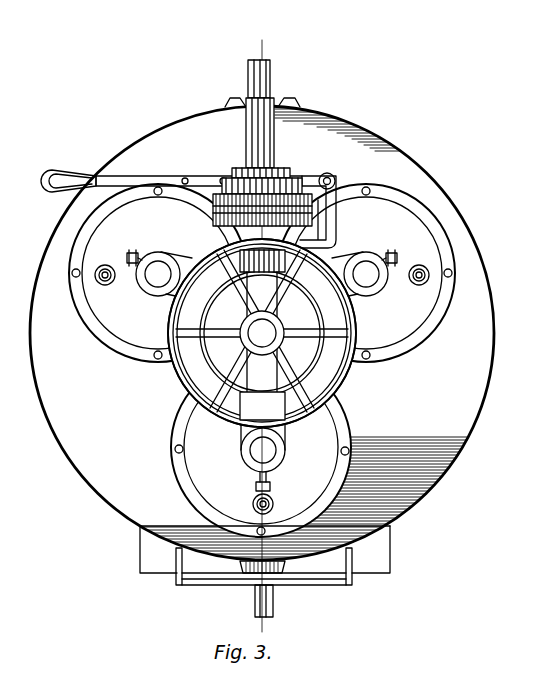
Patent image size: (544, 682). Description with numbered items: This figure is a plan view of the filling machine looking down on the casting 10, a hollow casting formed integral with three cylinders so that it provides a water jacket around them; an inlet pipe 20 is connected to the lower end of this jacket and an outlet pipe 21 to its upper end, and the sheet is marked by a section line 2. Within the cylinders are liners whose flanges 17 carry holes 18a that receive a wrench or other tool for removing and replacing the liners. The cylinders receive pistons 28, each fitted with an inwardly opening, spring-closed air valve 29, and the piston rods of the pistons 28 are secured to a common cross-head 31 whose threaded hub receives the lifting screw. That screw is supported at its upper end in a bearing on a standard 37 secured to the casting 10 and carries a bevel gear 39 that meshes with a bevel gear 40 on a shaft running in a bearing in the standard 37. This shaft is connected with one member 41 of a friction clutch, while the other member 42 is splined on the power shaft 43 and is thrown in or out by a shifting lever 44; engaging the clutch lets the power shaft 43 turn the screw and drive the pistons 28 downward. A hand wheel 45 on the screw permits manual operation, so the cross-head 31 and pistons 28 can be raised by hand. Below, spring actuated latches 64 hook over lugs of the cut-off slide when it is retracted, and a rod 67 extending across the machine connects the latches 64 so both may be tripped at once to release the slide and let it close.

The section line 2 is at (262, 328).
The casting 10 is at (483, 410).
The flanges 17 is at (174, 480).
The holes 18a is at (450, 332).
The inlet pipe 20 is at (272, 72).
The outlet pipe 21 is at (274, 606).
The pistons 28 is at (283, 480).
The air valve 29 is at (252, 500).
The cross-head 31 is at (358, 296).
The standard 37 is at (206, 232).
The bevel gear 39 is at (320, 366).
The bevel gear 40 is at (226, 254).
The friction clutch member 41 is at (311, 211).
The friction clutch member 42 is at (304, 185).
The power shaft 43 is at (248, 141).
The shifting lever 44 is at (60, 176).
The hand wheel 45 is at (343, 393).
The spring actuated latches 64 is at (176, 583).
The rod 67 is at (196, 585).